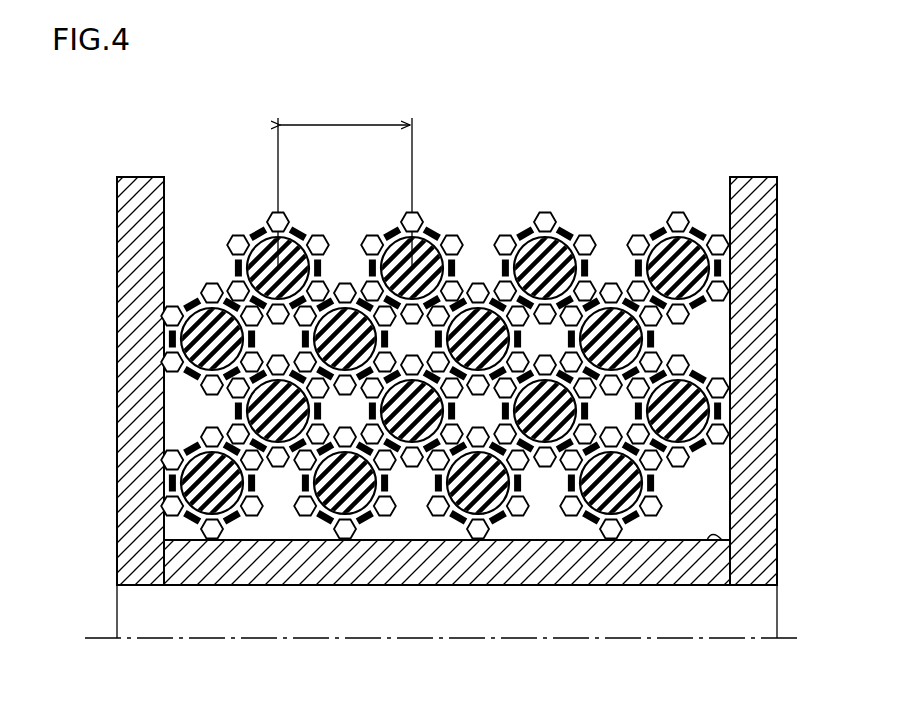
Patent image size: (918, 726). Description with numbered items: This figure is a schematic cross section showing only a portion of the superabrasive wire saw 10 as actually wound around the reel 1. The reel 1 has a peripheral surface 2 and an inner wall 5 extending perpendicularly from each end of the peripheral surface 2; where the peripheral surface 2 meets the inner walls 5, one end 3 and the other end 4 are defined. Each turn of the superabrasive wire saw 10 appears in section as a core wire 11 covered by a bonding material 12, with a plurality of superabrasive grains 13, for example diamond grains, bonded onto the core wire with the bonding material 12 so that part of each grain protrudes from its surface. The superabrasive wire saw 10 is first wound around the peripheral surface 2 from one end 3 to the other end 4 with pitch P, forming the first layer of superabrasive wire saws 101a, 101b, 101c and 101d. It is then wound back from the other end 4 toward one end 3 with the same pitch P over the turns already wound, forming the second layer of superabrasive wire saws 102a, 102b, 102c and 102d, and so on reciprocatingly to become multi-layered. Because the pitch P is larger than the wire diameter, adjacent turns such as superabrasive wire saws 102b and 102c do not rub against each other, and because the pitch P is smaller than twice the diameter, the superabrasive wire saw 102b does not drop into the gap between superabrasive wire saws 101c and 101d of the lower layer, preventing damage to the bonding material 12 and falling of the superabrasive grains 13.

The reel 1 is at (784, 172).
The peripheral surface 2 is at (670, 540).
The one end 3 is at (192, 548).
The other end 4 is at (707, 540).
The inner wall 5 is at (165, 203).
The superabrasive wire saw 10 is at (571, 222).
The core wire 11 is at (680, 276).
The bonding material 12 is at (659, 231).
The superabrasive grain 13 is at (678, 224).
The pitch P is at (345, 181).
The superabrasive wire saw in first layer 101a is at (218, 490).
The superabrasive wire saw in first layer 101b is at (345, 488).
The superabrasive wire saw in first layer 101c is at (478, 488).
The superabrasive wire saw in first layer 101d is at (611, 488).
The superabrasive wire saw in second layer 102a is at (690, 412).
The superabrasive wire saw in second layer 102b is at (545, 418).
The superabrasive wire saw in second layer 102c is at (412, 418).
The superabrasive wire saw in second layer 102d is at (262, 409).